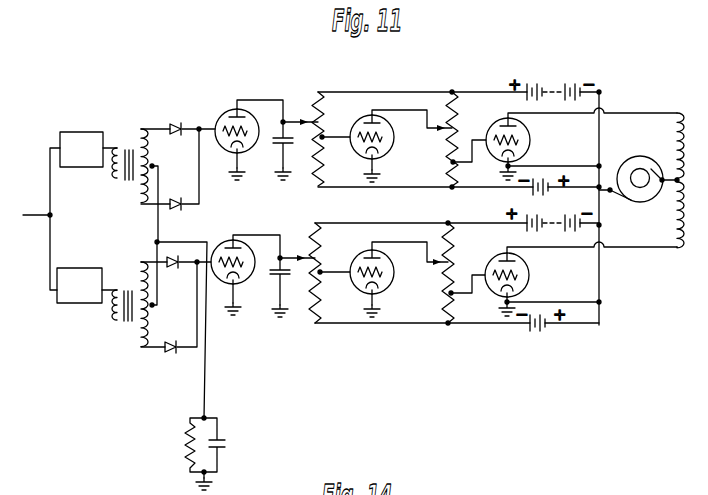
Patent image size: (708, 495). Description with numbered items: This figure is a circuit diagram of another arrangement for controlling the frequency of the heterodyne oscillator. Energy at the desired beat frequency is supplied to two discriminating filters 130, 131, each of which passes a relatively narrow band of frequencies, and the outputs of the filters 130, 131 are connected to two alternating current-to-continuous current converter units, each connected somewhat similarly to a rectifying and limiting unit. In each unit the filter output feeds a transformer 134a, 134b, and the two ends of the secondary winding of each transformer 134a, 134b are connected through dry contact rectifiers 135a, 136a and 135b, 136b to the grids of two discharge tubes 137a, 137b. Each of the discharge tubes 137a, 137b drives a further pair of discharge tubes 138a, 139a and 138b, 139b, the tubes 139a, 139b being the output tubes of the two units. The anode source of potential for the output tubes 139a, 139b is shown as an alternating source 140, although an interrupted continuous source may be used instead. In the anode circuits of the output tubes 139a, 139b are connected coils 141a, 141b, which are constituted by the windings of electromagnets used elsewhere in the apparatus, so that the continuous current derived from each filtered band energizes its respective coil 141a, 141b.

The discriminating filter 130 is at (68, 130).
The discriminating filter 131 is at (72, 267).
The transformer 134a is at (137, 140).
The transformer 134b is at (125, 326).
The dry contact rectifier 135a is at (173, 122).
The dry contact rectifier 135b is at (163, 262).
The dry contact rectifier 136a is at (174, 183).
The dry contact rectifier 136b is at (168, 358).
The discharge tube 137a is at (228, 107).
The discharge tube 137b is at (243, 283).
The discharge tube 138a is at (367, 118).
The discharge tube 138b is at (382, 287).
The output tube 139a is at (498, 118).
The output tube 139b is at (530, 274).
The alternating source 140 is at (643, 203).
The coil 141a is at (675, 113).
The coil 141b is at (670, 235).